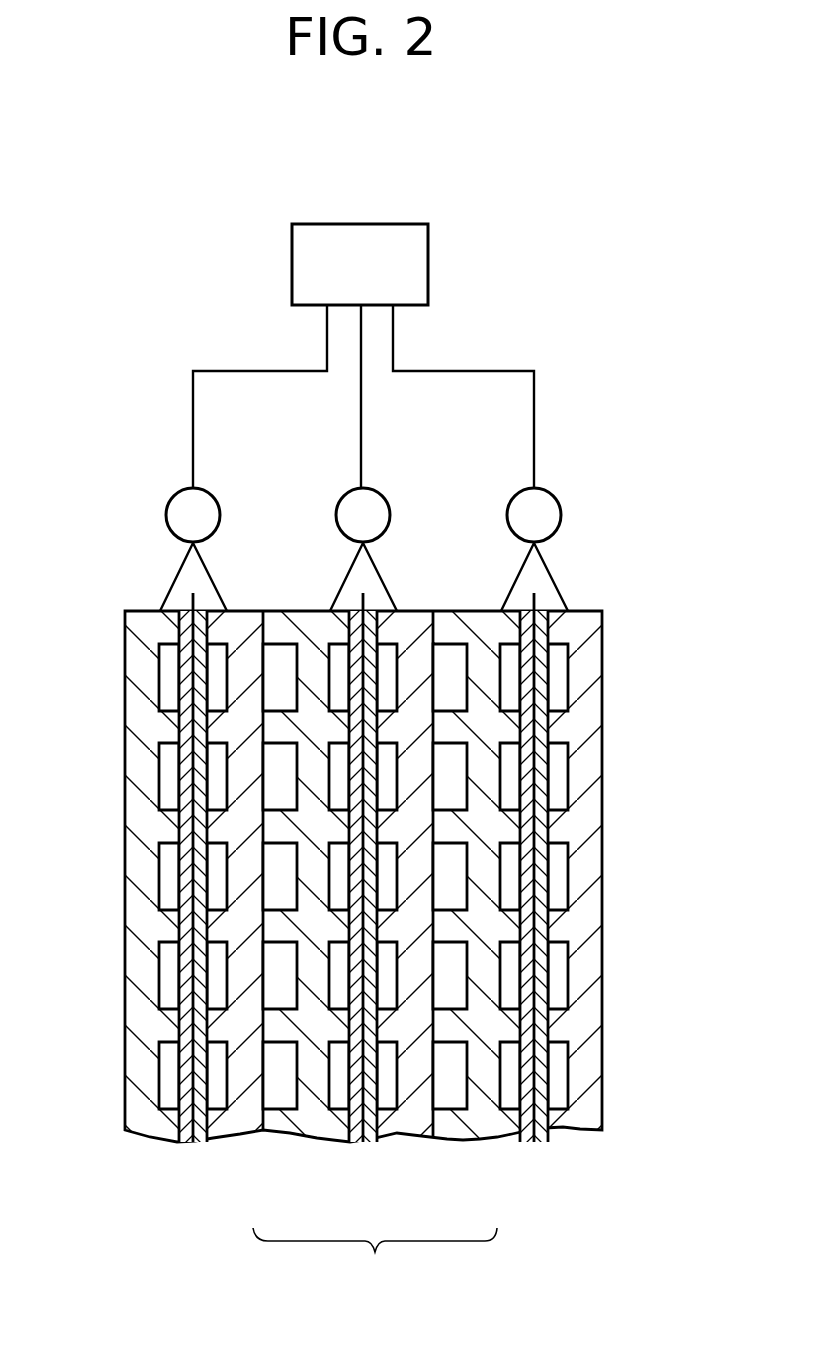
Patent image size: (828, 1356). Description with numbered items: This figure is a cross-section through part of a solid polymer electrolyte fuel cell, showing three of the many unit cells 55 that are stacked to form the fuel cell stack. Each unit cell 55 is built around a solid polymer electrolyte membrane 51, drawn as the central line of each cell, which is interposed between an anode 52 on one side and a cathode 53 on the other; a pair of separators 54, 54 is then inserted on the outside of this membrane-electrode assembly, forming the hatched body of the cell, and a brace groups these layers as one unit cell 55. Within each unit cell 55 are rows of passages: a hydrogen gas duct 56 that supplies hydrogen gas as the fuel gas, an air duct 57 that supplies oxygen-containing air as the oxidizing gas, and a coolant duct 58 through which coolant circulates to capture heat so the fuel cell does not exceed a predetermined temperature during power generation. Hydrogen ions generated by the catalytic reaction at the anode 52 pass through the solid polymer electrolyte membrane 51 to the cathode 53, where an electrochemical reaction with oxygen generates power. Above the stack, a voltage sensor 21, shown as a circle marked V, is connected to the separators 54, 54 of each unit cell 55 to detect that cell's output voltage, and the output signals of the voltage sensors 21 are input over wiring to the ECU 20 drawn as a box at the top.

The ECU 20 is at (363, 224).
The voltage sensor 21 is at (214, 498).
The solid polymer electrolyte membrane 51 is at (363, 1117).
The anode 52 is at (350, 1075).
The cathode 53 is at (391, 1112).
The separator 54 is at (315, 1115).
The unit cell 55 is at (375, 1259).
The hydrogen gas duct 56 is at (343, 988).
The air duct 57 is at (390, 990).
The coolant duct 58 is at (275, 960).